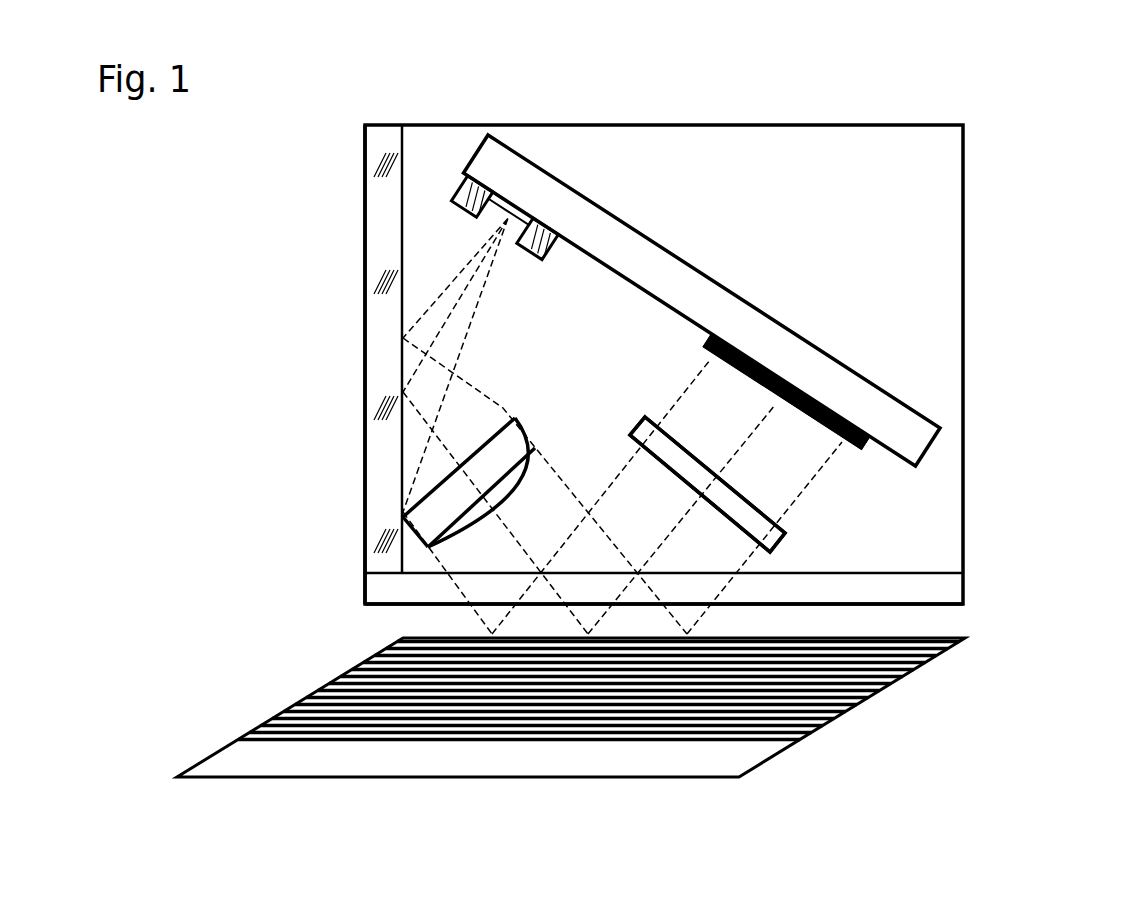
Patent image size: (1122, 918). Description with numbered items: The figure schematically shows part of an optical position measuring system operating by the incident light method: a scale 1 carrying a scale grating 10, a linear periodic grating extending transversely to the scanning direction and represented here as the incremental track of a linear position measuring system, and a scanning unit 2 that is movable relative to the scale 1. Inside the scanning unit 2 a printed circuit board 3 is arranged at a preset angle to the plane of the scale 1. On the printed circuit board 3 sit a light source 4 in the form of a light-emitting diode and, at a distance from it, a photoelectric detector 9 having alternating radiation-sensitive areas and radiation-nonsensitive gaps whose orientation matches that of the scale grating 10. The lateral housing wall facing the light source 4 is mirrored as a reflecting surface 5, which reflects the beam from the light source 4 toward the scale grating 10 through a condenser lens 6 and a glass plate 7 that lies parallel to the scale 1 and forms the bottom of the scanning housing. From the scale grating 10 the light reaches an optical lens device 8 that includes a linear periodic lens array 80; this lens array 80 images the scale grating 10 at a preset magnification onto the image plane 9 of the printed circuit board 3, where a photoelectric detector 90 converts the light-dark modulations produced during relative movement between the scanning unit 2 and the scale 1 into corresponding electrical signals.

The scale 1 is at (735, 763).
The scale grating 10 is at (327, 712).
The scanning unit 2 is at (933, 247).
The printed circuit board 3 is at (700, 293).
The light source 4 is at (463, 190).
The reflecting surface 5 is at (380, 238).
The condenser lens 6 is at (437, 508).
The glass plate 7 is at (925, 588).
The optical lens device 8 is at (772, 533).
The lens array 80 is at (707, 484).
The photoelectric detector / image plane 9 is at (901, 416).
The photoelectric detector 90 is at (832, 408).